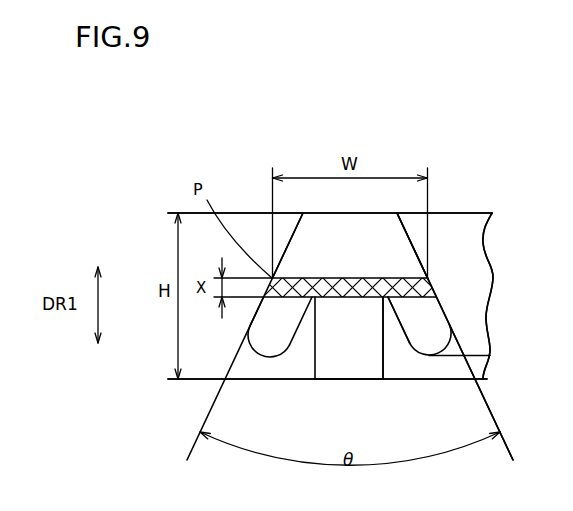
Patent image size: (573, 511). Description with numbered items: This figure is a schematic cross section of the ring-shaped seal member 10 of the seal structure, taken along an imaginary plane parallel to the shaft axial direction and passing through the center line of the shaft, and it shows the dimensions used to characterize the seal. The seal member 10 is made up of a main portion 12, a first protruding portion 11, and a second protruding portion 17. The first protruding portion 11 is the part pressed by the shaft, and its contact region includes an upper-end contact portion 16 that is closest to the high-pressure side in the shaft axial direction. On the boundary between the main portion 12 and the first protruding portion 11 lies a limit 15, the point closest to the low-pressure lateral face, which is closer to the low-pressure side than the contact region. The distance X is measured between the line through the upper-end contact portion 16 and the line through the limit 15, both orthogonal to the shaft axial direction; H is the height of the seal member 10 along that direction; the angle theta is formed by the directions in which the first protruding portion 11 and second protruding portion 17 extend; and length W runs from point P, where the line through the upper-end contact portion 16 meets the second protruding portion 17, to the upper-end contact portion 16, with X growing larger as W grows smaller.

The seal member 10 is at (390, 130).
The first protruding portion 11 is at (430, 332).
The main portion 12 is at (350, 363).
The limit 15 is at (388, 298).
The upper-end contact portion 16 is at (432, 272).
The second protruding portion 17 is at (267, 340).